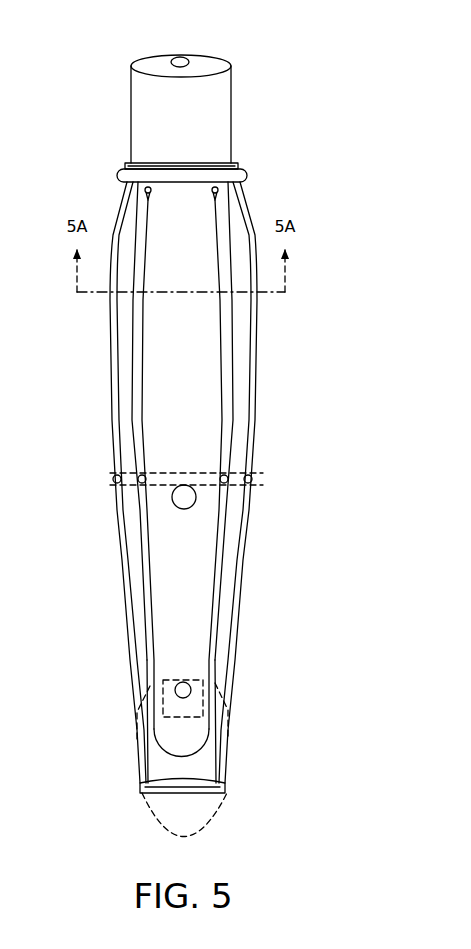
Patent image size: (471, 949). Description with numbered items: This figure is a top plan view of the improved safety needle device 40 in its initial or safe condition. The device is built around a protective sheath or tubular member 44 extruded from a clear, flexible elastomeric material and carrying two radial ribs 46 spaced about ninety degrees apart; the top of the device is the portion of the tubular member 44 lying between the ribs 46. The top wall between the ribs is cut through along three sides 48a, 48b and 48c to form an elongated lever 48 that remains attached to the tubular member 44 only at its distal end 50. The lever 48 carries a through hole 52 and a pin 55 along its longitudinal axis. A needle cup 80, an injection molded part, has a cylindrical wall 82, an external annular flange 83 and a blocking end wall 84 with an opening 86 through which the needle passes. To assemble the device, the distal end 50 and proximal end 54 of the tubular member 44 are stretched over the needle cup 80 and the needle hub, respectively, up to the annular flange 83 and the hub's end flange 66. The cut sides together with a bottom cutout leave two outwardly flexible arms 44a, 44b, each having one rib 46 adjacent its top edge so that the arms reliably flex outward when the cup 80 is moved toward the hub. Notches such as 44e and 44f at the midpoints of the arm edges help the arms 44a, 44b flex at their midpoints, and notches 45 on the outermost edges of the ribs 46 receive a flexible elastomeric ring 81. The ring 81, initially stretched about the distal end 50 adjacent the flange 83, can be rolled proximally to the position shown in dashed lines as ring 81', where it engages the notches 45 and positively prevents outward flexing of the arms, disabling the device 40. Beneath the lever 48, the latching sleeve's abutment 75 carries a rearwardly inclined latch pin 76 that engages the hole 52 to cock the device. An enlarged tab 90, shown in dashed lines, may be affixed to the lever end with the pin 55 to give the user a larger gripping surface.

The safety needle device 40 is at (50, 217).
The tubular member 44 is at (147, 618).
The flexible arm 44a is at (120, 530).
The flexible arm 44b is at (252, 552).
The notch 44e is at (143, 485).
The notch 44f is at (223, 477).
The notches 45 is at (115, 482).
The radial ribs 46 is at (125, 430).
The lever 48 is at (205, 675).
The cut side 48a is at (223, 368).
The cut side 48b is at (140, 360).
The cut side 48c is at (186, 757).
The distal end 50 is at (223, 162).
The through hole 52 is at (188, 503).
The proximal end 54 is at (208, 763).
The pin 55 is at (175, 690).
The end flange 66 is at (220, 788).
The abutment 75 is at (135, 712).
The latch pin 76 is at (157, 728).
The needle cup 80 is at (250, 82).
The elastomeric ring 81 is at (201, 183).
The shifted ring 81' is at (186, 456).
The cylindrical wall 82 is at (130, 110).
The annular flange 83 is at (127, 167).
The blocking end wall 84 is at (210, 62).
The opening 86 is at (178, 60).
The enlarged tab 90 is at (215, 818).